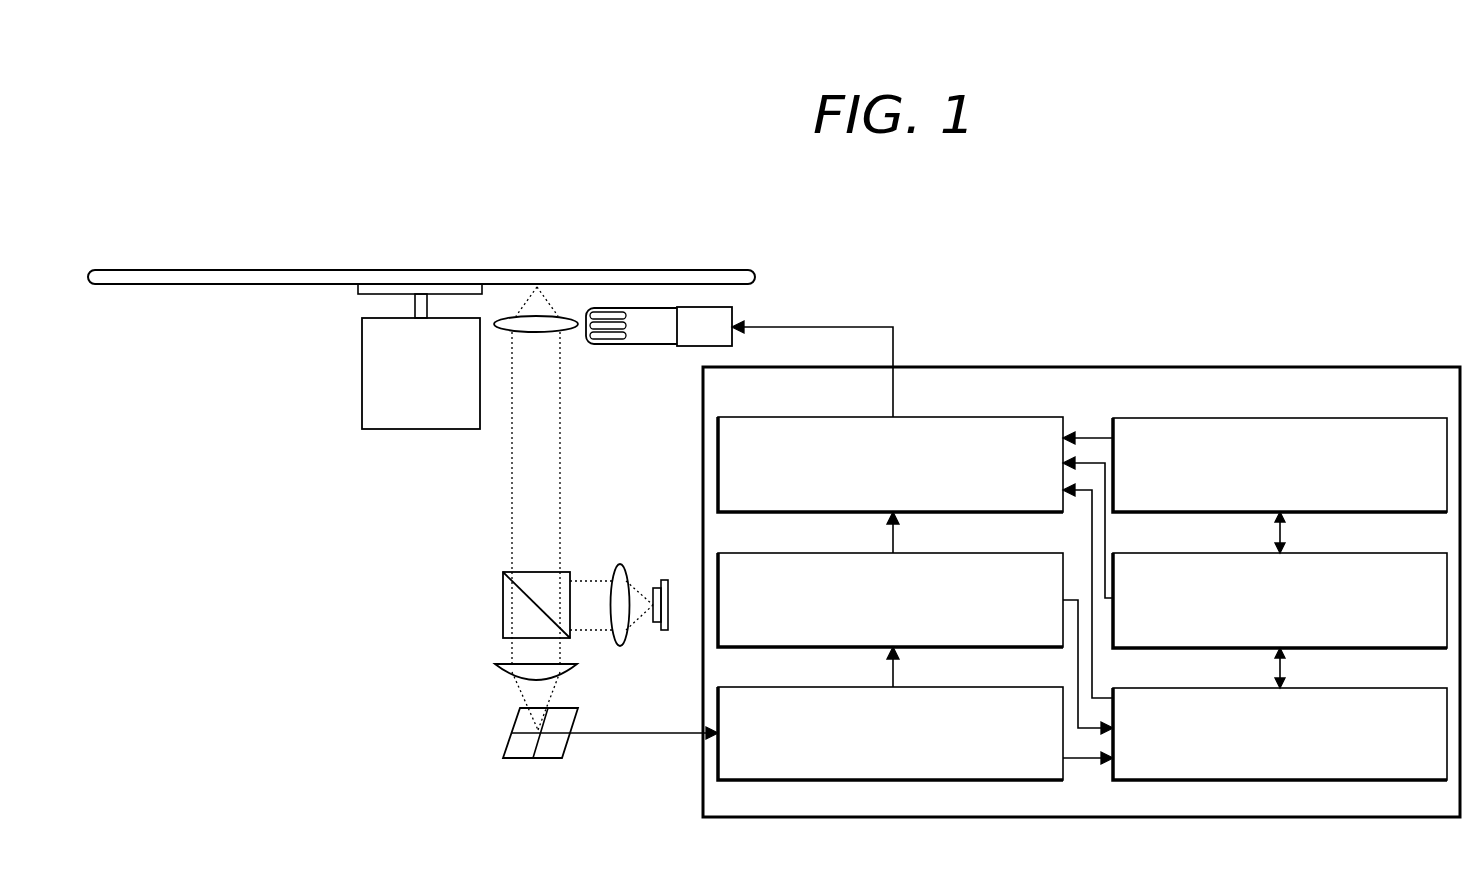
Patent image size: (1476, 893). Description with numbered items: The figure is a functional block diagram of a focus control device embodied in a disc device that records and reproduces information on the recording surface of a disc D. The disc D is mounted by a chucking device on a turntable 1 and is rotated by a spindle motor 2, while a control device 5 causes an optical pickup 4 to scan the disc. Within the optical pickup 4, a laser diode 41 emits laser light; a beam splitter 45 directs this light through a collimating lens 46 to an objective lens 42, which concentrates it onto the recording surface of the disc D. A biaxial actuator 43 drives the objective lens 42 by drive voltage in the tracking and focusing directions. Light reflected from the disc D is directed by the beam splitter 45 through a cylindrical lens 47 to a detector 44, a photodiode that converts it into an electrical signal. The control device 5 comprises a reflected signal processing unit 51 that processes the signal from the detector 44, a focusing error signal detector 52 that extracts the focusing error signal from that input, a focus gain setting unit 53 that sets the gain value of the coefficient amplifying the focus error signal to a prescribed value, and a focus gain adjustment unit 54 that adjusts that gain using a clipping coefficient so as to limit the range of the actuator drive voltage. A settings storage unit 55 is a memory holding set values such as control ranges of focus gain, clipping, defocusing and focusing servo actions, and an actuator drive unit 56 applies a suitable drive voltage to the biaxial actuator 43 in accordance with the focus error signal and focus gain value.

The turntable 1 is at (365, 288).
The spindle motor 2 is at (445, 333).
The disc D is at (642, 270).
The optical pickup 4 is at (423, 592).
The laser diode 41 is at (665, 582).
The objective lens 42 is at (562, 318).
The biaxial actuator 43 is at (690, 342).
The detector 44 is at (563, 745).
The beam splitter 45 is at (505, 573).
The collimating lens 46 is at (619, 565).
The cylindrical lens 47 is at (505, 665).
The control device 5 is at (1422, 349).
The reflected signal processing unit 51 is at (1007, 687).
The focusing error signal detector 52 is at (1007, 553).
The focus gain setting unit 53 is at (1385, 688).
The focus gain adjustment unit 54 is at (1385, 553).
The settings storage unit 55 is at (1385, 418).
The actuator drive unit 56 is at (1007, 417).